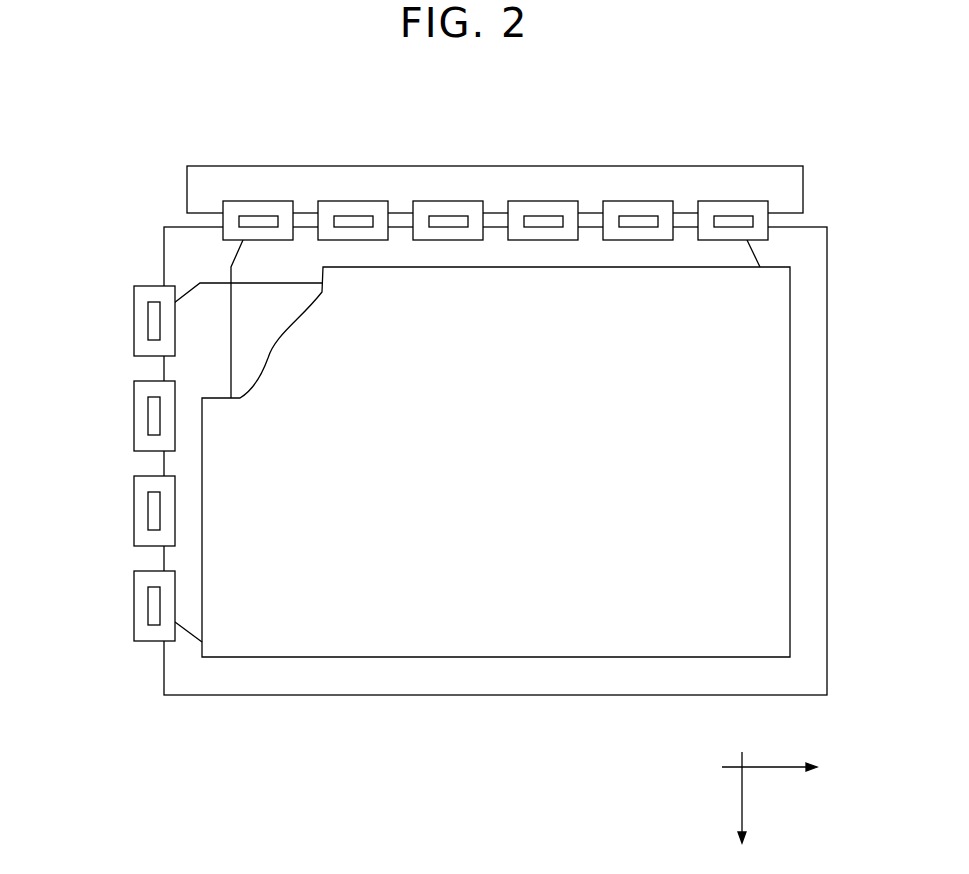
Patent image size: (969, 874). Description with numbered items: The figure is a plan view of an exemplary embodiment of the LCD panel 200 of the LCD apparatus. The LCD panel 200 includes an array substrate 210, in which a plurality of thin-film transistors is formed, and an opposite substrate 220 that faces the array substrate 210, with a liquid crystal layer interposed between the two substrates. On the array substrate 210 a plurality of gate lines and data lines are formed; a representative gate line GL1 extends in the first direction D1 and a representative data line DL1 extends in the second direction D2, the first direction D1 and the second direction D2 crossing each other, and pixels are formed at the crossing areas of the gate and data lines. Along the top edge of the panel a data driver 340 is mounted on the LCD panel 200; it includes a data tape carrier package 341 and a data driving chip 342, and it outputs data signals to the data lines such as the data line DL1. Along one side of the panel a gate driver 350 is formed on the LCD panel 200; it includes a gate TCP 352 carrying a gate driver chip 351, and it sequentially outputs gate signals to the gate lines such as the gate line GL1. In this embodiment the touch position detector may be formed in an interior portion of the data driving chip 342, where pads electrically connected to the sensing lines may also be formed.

The LCD panel 200 is at (495, 508).
The array substrate 210 is at (518, 680).
The opposite substrate 220 is at (585, 645).
The data driver 340 is at (495, 164).
The data tape carrier package 341 is at (520, 208).
The data driving chip 342 is at (638, 181).
The gate driver 350 is at (100, 463).
The gate driver chip 351 is at (155, 313).
The gate TCP 352 is at (152, 348).
The gate line GL1 is at (323, 292).
The data line DL1 is at (231, 378).
The first direction D1 is at (787, 767).
The second direction D2 is at (741, 813).